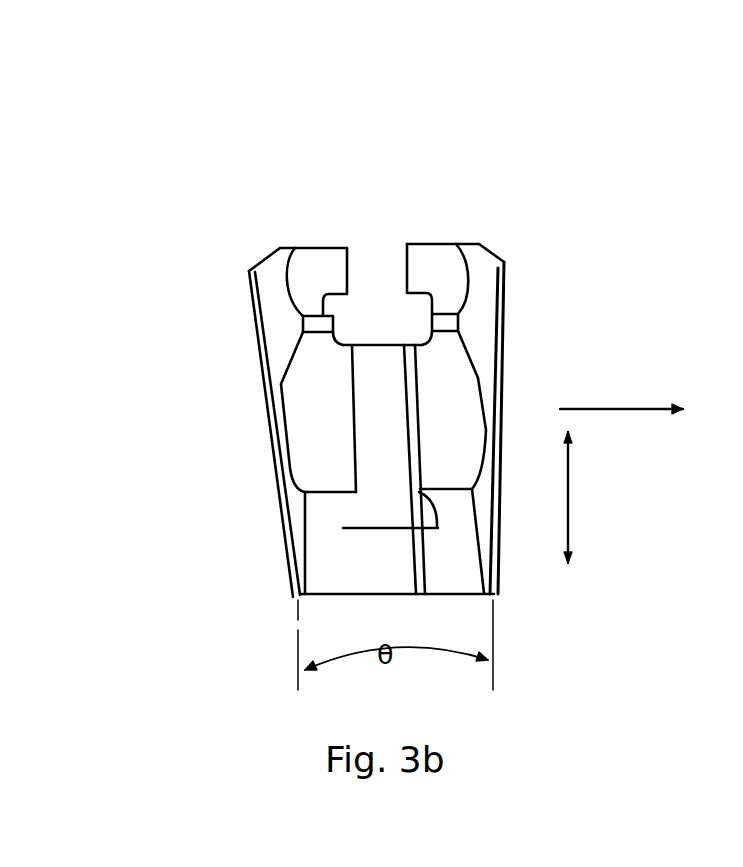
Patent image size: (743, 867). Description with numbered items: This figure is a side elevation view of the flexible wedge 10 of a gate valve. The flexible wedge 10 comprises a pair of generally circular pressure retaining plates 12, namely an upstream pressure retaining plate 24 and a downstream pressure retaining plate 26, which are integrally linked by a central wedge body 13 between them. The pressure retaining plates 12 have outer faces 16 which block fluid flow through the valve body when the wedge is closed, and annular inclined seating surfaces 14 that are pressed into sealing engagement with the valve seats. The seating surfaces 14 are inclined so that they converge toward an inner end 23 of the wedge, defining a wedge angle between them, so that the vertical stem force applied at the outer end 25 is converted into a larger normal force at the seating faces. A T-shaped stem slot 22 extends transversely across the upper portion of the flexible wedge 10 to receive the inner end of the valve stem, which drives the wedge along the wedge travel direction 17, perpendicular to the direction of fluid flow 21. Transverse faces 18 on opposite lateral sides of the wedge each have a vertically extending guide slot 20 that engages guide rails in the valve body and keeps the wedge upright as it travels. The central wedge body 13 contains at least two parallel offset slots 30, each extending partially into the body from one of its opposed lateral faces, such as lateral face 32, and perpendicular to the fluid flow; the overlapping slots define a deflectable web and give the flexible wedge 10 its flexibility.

The flexible wedge 10 is at (258, 135).
The pressure retaining plates 12 is at (259, 252).
The central wedge body 13 is at (377, 345).
The seating surfaces 14 is at (247, 279).
The outer faces 16 is at (508, 345).
The wedge travel direction 17 is at (570, 483).
The transverse faces 18 is at (304, 424).
The guide slot 20 is at (362, 470).
The direction of fluid flow 21 is at (618, 409).
The T-shaped stem slot 22 is at (352, 247).
The inner end 23 is at (512, 567).
The upstream pressure retaining plate 24 is at (276, 322).
The outer end 25 is at (420, 230).
The downstream pressure retaining plate 26 is at (483, 290).
The offset slots 30 is at (412, 400).
The lateral face 32 is at (388, 460).